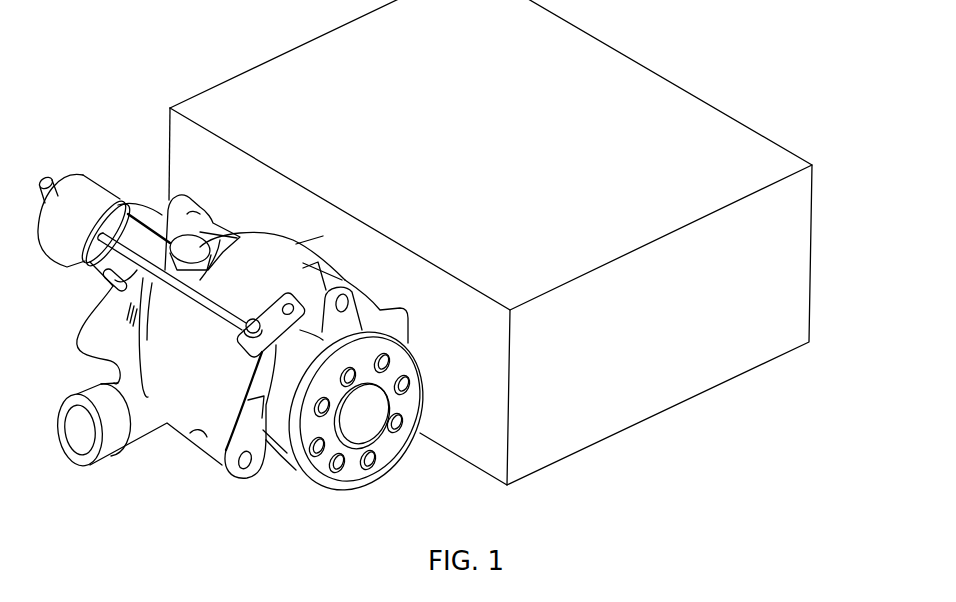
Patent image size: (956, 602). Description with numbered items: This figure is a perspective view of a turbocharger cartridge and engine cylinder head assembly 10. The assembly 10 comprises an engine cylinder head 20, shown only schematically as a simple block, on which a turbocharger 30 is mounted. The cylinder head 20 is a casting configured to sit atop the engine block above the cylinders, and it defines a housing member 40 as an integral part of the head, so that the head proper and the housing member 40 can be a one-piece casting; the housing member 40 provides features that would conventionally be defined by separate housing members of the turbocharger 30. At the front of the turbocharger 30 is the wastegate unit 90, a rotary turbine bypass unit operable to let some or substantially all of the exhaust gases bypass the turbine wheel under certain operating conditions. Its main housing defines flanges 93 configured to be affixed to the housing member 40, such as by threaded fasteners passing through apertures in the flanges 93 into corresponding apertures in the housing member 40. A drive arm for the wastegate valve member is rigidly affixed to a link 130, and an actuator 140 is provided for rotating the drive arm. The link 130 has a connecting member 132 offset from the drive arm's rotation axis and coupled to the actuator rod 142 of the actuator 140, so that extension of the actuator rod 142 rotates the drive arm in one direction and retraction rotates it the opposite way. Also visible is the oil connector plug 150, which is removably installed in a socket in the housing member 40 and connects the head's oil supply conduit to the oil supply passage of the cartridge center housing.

The assembly 10 is at (771, 78).
The engine cylinder head 20 is at (743, 142).
The turbocharger 30 is at (172, 438).
The housing member 40 is at (272, 255).
The wastegate unit 90 is at (383, 335).
The flanges 93 is at (345, 290).
The link 130 is at (252, 350).
The connecting member 132 is at (253, 320).
The actuator 140 is at (110, 192).
The actuator rod 142 is at (206, 305).
The oil connector plug 150 is at (188, 248).